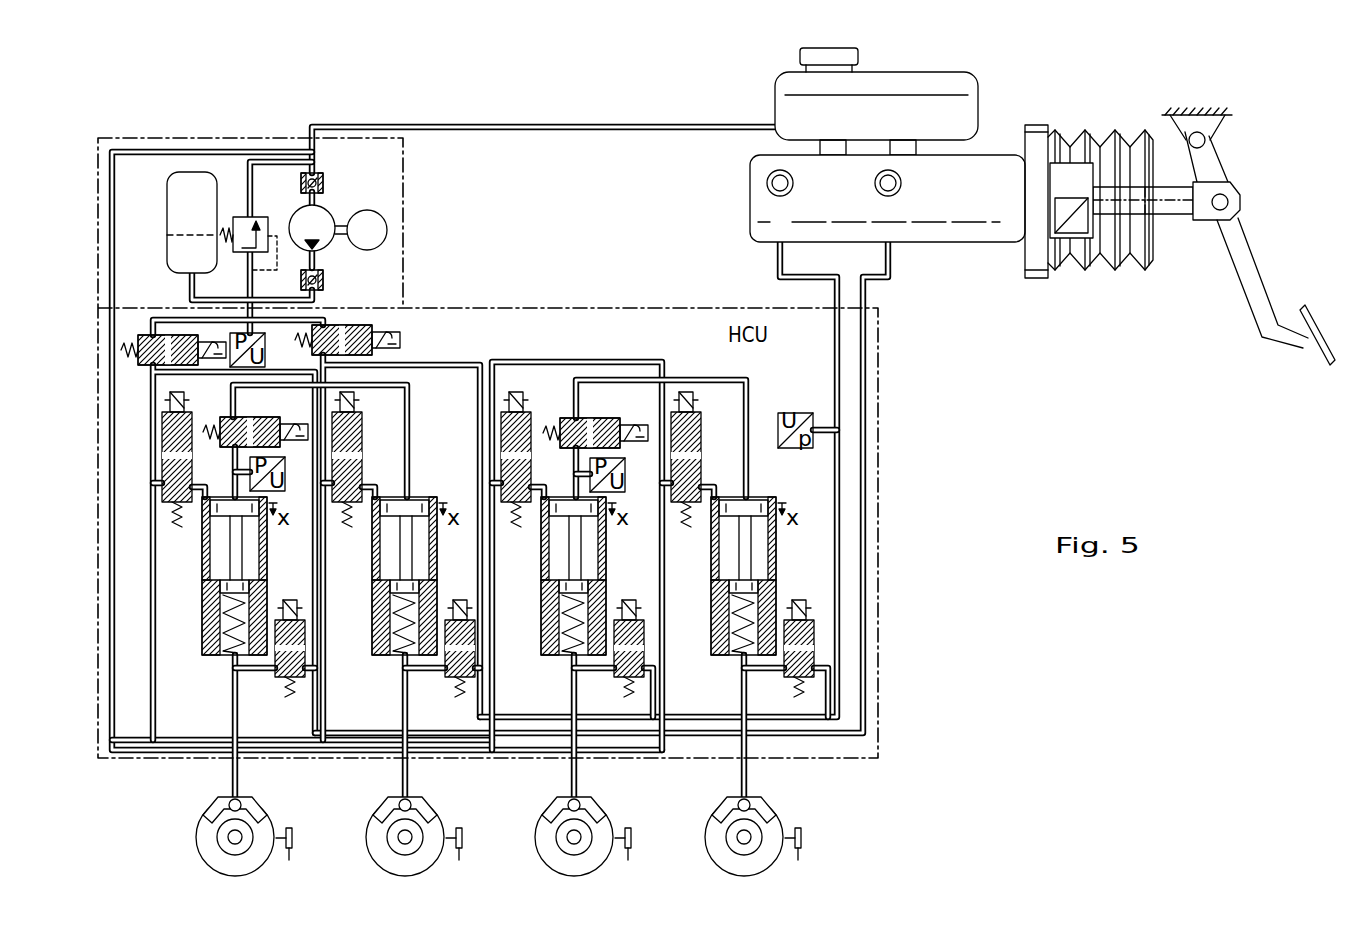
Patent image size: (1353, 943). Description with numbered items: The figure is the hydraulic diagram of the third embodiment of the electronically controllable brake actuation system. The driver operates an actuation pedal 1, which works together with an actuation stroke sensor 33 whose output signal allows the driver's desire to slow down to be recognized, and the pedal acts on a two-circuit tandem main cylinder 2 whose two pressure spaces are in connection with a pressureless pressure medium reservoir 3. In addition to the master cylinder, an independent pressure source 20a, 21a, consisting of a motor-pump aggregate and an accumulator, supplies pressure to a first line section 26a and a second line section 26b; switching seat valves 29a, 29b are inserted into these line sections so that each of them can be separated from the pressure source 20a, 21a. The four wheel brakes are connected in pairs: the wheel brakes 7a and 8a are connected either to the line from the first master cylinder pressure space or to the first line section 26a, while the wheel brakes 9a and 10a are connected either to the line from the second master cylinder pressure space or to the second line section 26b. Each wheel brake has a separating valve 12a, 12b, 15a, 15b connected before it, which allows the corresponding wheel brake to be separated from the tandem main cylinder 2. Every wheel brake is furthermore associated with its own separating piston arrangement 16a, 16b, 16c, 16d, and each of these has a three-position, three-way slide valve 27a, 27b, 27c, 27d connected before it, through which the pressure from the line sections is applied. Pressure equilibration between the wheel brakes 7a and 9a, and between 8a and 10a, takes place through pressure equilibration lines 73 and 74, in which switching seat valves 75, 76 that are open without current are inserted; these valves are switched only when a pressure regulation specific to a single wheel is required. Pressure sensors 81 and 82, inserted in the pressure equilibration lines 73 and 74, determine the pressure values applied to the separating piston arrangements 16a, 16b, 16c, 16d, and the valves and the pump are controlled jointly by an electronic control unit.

The actuation pedal 1 is at (1243, 252).
The tandem main cylinder 2 is at (973, 232).
The pressure medium reservoir 3 is at (967, 90).
The actuation stroke sensor 33 is at (1064, 236).
The pressure source 20a is at (346, 198).
The pressure source 21a is at (190, 172).
The switching seat valve 29a is at (140, 333).
The switching seat valve 29b is at (343, 325).
The first line section 26a is at (150, 368).
The second line section 26b is at (322, 362).
The 3/3-way slide valve 27a is at (515, 507).
The 3/3-way slide valve 27b is at (175, 507).
The 3/3-way slide valve 27c is at (685, 507).
The 3/3-way slide valve 27d is at (345, 507).
The separating piston arrangement 16a is at (541, 588).
The separating piston arrangement 16b is at (202, 588).
The separating piston arrangement 16c is at (711, 588).
The separating piston arrangement 16d is at (372, 588).
The separating valve 12a is at (617, 680).
The separating valve 12b is at (279, 680).
The separating valve 15a is at (787, 680).
The separating valve 15b is at (449, 680).
The wheel brake 7a is at (544, 804).
The wheel brake 8a is at (205, 804).
The wheel brake 9a is at (714, 804).
The wheel brake 10a is at (375, 804).
The pressure equilibration line 73 is at (727, 380).
The pressure equilibration line 74 is at (410, 402).
The switching seat valve 75 is at (594, 418).
The switching seat valve 76 is at (222, 418).
The pressure sensor 81 is at (623, 478).
The pressure sensor 82 is at (286, 480).